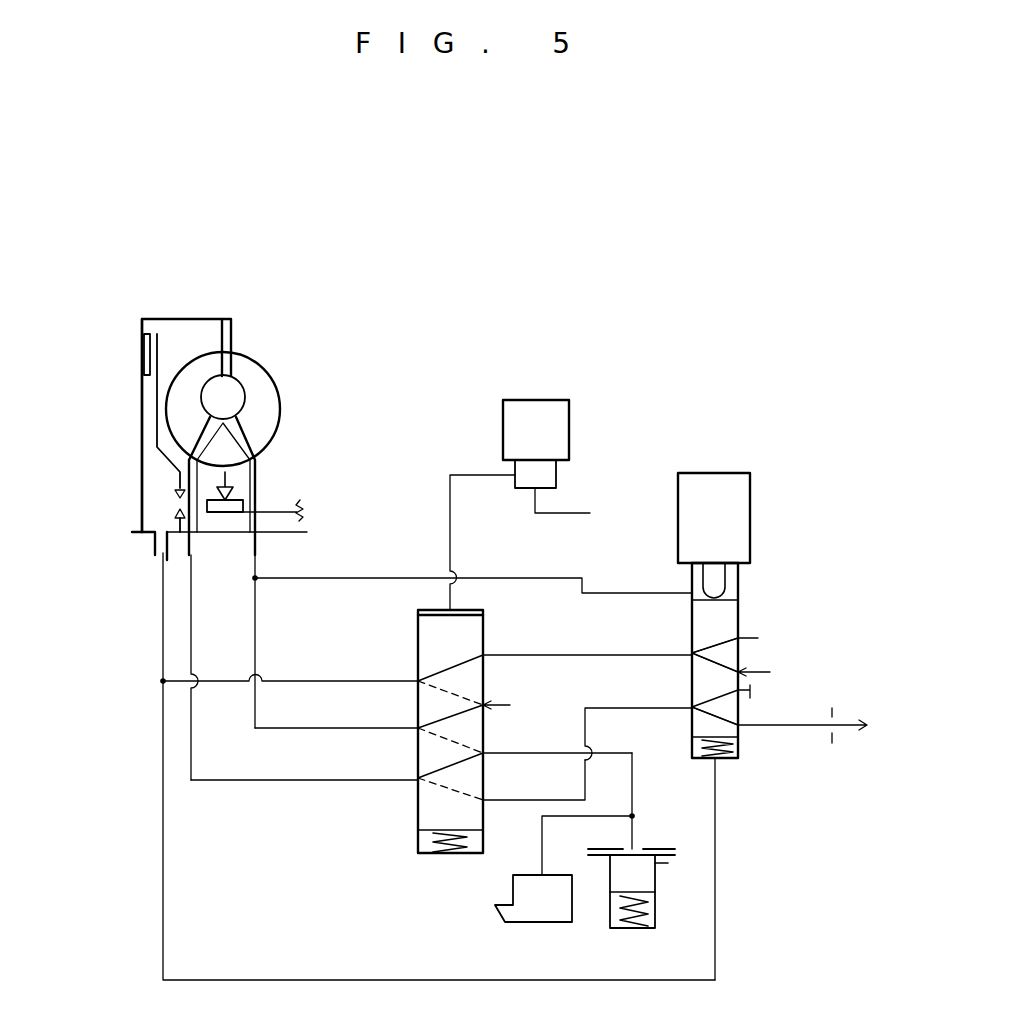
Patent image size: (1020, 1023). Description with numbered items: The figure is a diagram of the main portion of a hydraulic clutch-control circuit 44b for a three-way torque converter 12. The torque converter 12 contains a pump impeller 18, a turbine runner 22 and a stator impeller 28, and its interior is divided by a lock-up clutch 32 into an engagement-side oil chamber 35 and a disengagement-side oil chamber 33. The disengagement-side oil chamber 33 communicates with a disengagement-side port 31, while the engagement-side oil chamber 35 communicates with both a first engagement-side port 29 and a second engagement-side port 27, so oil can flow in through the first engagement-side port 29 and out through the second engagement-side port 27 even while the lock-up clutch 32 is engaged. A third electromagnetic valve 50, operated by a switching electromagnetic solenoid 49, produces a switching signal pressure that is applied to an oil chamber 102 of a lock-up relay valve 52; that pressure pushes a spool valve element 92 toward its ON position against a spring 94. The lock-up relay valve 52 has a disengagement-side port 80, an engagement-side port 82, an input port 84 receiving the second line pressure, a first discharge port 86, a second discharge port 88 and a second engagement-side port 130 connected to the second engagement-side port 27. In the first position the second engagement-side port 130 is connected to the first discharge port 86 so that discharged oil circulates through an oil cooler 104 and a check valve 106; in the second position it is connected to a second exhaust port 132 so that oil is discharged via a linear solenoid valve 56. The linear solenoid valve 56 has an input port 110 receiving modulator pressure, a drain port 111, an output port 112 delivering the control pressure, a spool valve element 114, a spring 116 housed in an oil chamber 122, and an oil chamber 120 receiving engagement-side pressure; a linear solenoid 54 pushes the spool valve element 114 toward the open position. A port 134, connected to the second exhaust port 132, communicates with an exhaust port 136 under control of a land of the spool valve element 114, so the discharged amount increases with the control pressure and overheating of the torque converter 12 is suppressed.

The torque converter 12 is at (197, 520).
The pump impeller 18 is at (250, 368).
The turbine runner 22 is at (178, 407).
The second engagement-side port 27 is at (197, 547).
The stator impeller 28 is at (230, 463).
The first engagement-side port 29 is at (260, 543).
The disengagement-side port 31 is at (153, 541).
The lock-up clutch 32 is at (160, 352).
The disengagement-side oil chamber 33 is at (155, 502).
The engagement-side oil chamber 35 is at (180, 328).
The hydraulic clutch-control circuit 44b is at (736, 333).
The switching electromagnetic solenoid 49 is at (515, 415).
The third electromagnetic valve 50 is at (521, 425).
The lock-up relay valve 52 is at (426, 718).
The linear solenoid 54 is at (702, 483).
The linear solenoid valve 56 is at (756, 703).
The disengagement-side port 80 is at (417, 678).
The engagement-side port 82 is at (417, 727).
The input port 84 is at (483, 705).
The first discharge port 86 is at (483, 752).
The second discharge port 88 is at (483, 656).
The spool valve element 92 is at (417, 796).
The spring 94 is at (417, 839).
The oil chamber 102 is at (465, 611).
The oil cooler 104 is at (532, 912).
The check valve 106 is at (620, 872).
The input port 110 is at (756, 768).
The drain port 111 is at (738, 637).
The output port 112 is at (692, 653).
The spool valve element 114 is at (697, 667).
The spring 116 is at (738, 753).
The oil chamber 120 is at (730, 578).
The oil chamber 122 is at (692, 745).
The second engagement-side port 130 is at (417, 777).
The second exhaust port 132 is at (483, 799).
The port 134 is at (692, 708).
The exhaust port 136 is at (738, 720).